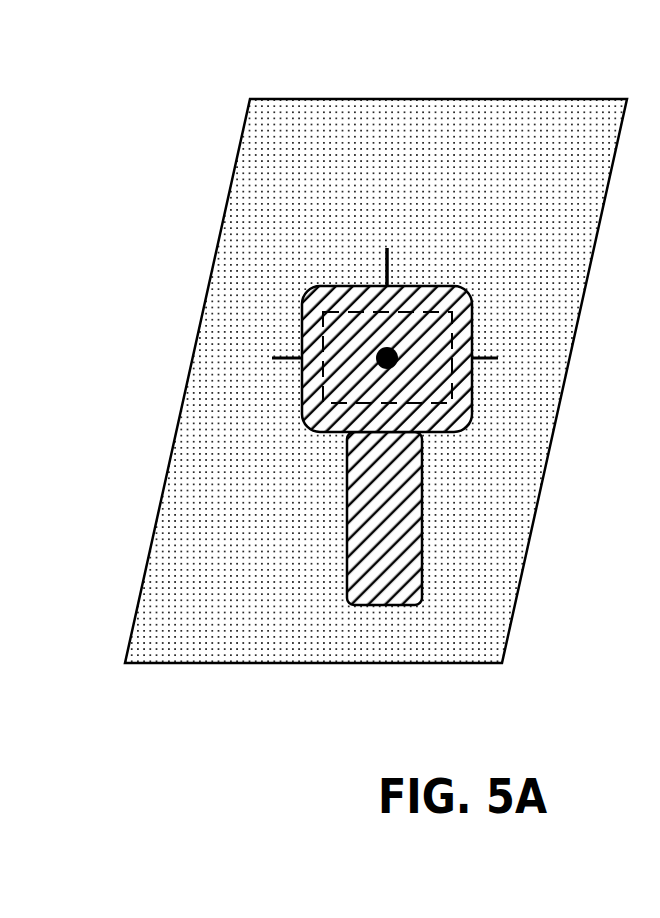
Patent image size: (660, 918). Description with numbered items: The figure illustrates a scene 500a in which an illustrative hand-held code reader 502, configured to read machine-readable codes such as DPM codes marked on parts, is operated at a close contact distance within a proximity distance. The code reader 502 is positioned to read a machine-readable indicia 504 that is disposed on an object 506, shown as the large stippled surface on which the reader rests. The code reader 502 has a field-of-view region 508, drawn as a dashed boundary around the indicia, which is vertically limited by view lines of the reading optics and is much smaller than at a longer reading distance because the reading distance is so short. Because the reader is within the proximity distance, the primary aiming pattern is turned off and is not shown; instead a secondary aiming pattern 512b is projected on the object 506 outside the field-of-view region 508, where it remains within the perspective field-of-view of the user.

The scene 500a is at (376, 346).
The object 506 is at (330, 97).
The hand-held code reader 502 is at (300, 322).
The field-of-view region 508 is at (362, 286).
The machine-readable indicia 504 is at (392, 350).
The secondary aiming pattern 512b is at (389, 260).